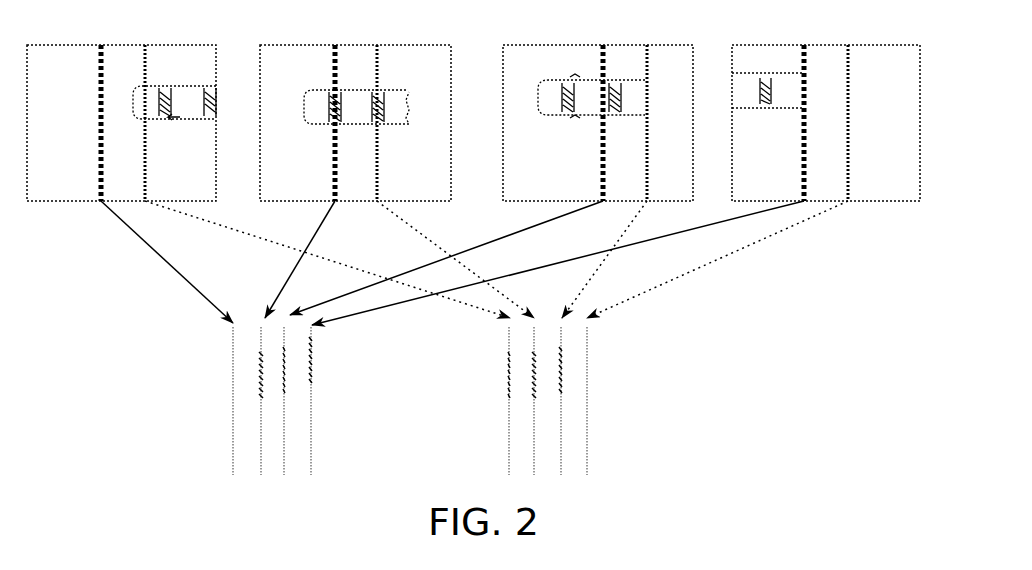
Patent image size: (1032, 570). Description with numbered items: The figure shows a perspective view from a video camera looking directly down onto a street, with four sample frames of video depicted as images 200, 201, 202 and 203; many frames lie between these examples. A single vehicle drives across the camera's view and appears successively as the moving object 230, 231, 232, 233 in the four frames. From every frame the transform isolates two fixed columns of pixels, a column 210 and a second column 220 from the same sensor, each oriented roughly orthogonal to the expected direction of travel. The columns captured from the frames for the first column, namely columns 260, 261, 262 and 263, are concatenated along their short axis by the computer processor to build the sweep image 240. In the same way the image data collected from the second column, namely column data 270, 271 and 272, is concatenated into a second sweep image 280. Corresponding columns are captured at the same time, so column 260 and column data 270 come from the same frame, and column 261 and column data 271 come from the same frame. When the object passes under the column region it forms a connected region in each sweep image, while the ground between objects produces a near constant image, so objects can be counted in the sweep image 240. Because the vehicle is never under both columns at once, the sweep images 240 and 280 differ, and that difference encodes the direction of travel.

The image 200 is at (121, 111).
The image 201 is at (355, 111).
The image 202 is at (598, 111).
The image 203 is at (826, 111).
The column 210 is at (81, 123).
The second column 220 is at (166, 123).
The moving object 230 is at (170, 84).
The moving object 231 is at (364, 94).
The moving object 232 is at (582, 91).
The moving object 233 is at (768, 99).
The sweep image 240 is at (272, 419).
The captured column 260 is at (167, 267).
The captured column 261 is at (288, 259).
The captured column 262 is at (446, 258).
The captured column 263 is at (558, 275).
The column image data 270 is at (327, 259).
The column image data 271 is at (455, 259).
The column image data 272 is at (708, 259).
The sweep image 280 is at (547, 419).